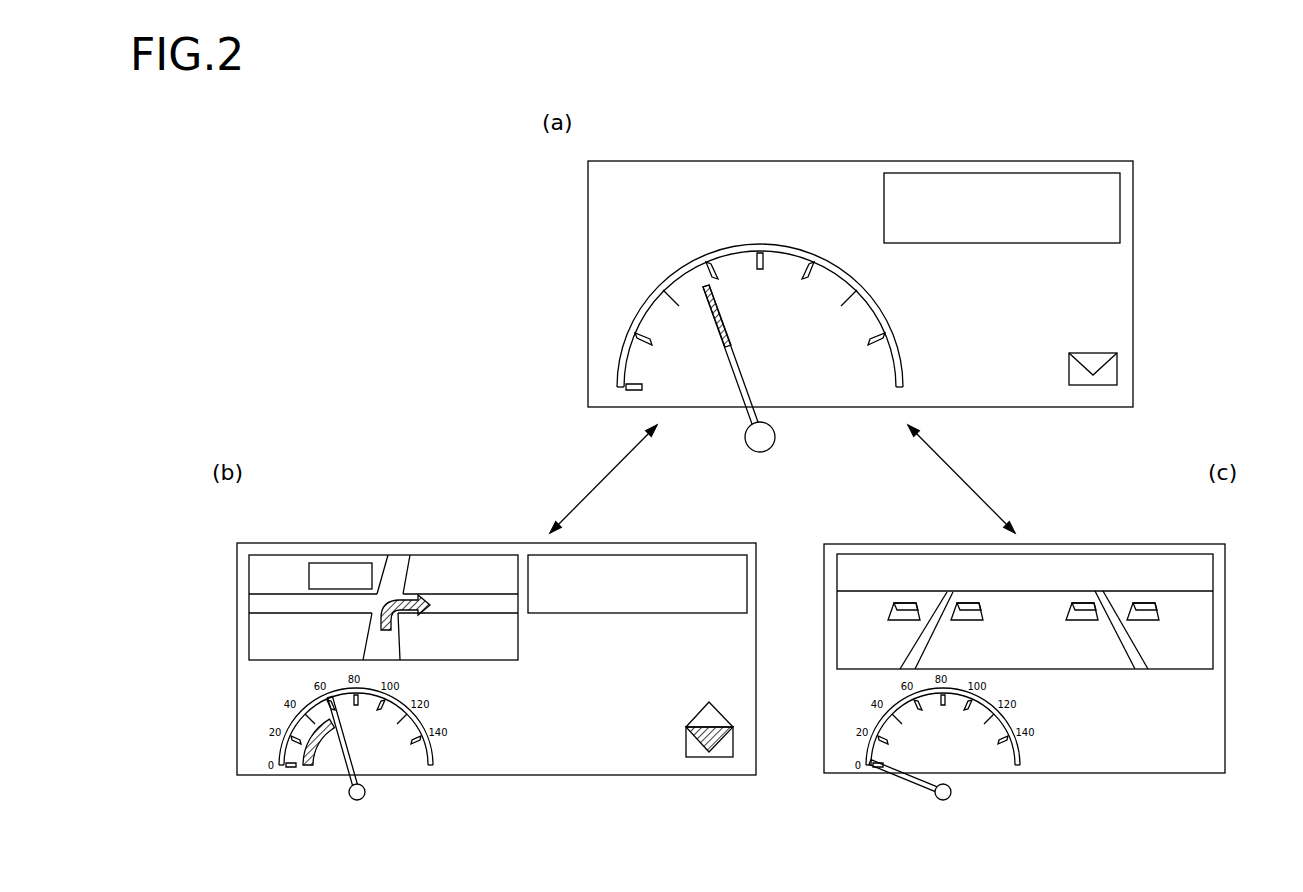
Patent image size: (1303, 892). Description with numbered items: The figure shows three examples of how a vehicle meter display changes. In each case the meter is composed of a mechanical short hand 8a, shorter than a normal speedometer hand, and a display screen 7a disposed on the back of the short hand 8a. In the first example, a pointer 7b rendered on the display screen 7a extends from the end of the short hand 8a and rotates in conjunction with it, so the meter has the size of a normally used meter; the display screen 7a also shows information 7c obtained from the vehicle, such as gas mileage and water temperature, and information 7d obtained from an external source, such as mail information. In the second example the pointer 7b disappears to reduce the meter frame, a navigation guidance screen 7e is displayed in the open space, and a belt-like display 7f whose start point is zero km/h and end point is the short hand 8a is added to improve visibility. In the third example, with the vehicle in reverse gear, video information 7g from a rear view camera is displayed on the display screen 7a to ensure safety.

The display screen 7a is at (1133, 310).
The pointer 7b is at (707, 300).
The information obtained from the vehicle 7c is at (1120, 203).
The information obtained from an external source 7d is at (1117, 366).
The navigation map display 7e is at (293, 562).
The belt-like display 7f is at (322, 755).
The video information 7g is at (1082, 572).
The short hand 8a is at (747, 377).